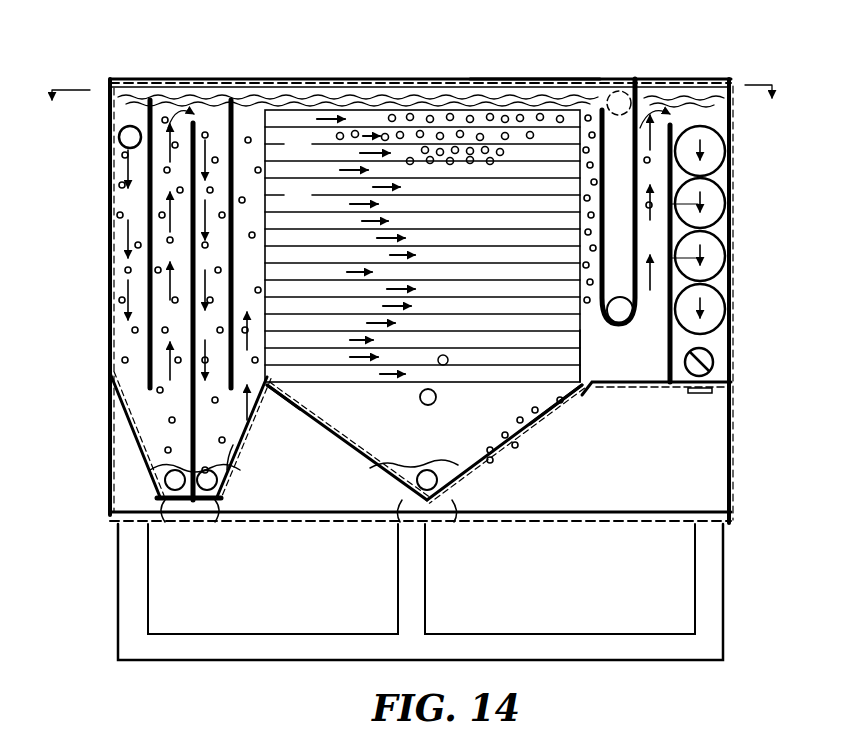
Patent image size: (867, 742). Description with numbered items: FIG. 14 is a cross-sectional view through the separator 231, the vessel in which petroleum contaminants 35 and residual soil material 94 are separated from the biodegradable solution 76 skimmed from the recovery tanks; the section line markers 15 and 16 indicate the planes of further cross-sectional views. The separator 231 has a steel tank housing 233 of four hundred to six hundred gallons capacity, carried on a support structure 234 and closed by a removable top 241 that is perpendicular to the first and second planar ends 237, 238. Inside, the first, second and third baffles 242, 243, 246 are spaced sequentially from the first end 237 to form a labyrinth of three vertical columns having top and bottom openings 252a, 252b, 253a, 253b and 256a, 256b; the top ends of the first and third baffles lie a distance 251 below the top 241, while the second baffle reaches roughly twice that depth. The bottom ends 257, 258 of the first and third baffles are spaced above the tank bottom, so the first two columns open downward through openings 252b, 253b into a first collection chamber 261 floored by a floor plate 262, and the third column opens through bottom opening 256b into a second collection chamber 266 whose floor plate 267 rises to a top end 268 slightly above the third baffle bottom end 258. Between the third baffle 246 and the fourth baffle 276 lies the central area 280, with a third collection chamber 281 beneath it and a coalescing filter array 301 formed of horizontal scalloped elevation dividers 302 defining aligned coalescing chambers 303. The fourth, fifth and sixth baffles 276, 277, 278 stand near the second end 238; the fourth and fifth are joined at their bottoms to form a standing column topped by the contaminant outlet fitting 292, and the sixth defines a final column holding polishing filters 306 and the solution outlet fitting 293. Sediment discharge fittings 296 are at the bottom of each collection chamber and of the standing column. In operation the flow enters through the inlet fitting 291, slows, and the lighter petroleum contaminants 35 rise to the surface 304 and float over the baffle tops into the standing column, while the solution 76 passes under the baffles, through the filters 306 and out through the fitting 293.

The section line 15- 15 is at (412, 99).
The heat exchanger tube rows 16 is at (422, 246).
The petroleum contaminants 35 is at (262, 105).
The biodegradable solution 76 is at (712, 106).
The soil material 94 is at (460, 165).
The separator 231 is at (806, 252).
The tank housing 233 is at (733, 470).
The support structure 234 is at (707, 583).
The first planar end 237 is at (140, 293).
The second planar end 238 is at (724, 172).
The removable top 241 is at (516, 78).
The first baffle 242 is at (124, 203).
The second baffle 243 is at (190, 237).
The third baffle 246 is at (246, 310).
The distance 251 is at (206, 75).
The top opening of first column 252a is at (112, 80).
The bottom opening of first column 252b is at (118, 375).
The top opening of second column 253a is at (125, 146).
The bottom opening of second column 253b is at (125, 408).
The top opening of third column 256a is at (198, 180).
The bottom opening of third column 256b is at (300, 408).
The bottom end of first baffle 257 is at (164, 445).
The bottom end of third baffle 258 is at (244, 428).
The first collection chamber 261 is at (150, 470).
The floor plate 262 is at (125, 492).
The second collection chamber 266 is at (232, 445).
The floor plate 267 is at (232, 505).
The top end of floor plate 268 is at (300, 385).
The fourth baffle 276 is at (724, 202).
The fifth baffle 277 is at (724, 238).
The sixth baffle 278 is at (724, 265).
The central area 280 is at (268, 110).
The third collection chamber 281 is at (520, 440).
The inlet fitting 291 is at (144, 105).
The contaminant outlet fitting 292 is at (612, 92).
The solution outlet fitting 293 is at (710, 352).
The sediment discharge fittings 296 is at (628, 330).
The coalescing filter array 301 is at (548, 400).
The scalloped elevation dividers 302 is at (510, 345).
The coalescing chambers 303 is at (443, 366).
The surface 304 is at (400, 96).
The polishing filters 306 is at (726, 141).